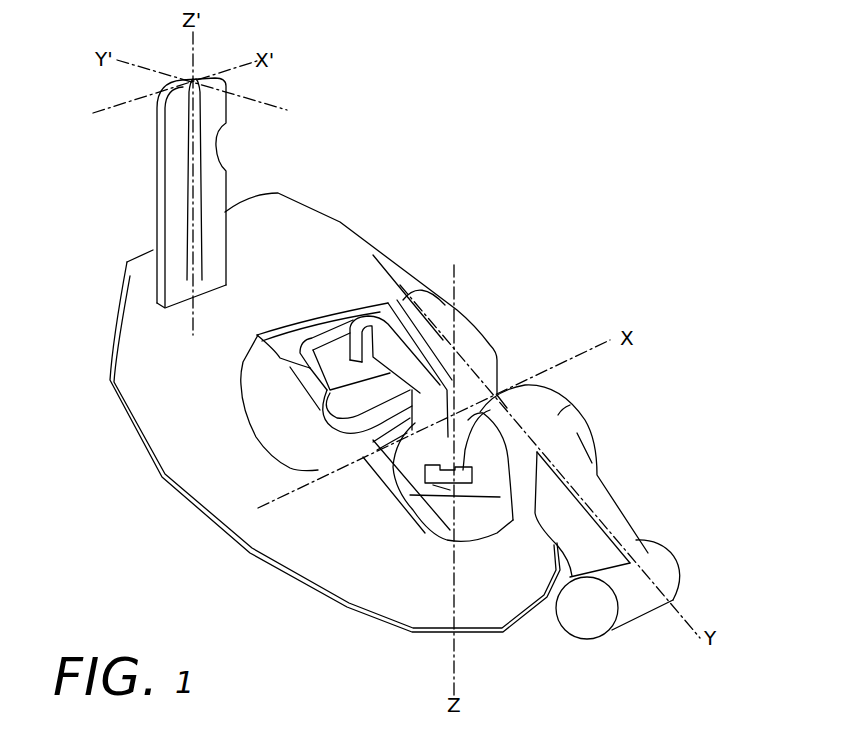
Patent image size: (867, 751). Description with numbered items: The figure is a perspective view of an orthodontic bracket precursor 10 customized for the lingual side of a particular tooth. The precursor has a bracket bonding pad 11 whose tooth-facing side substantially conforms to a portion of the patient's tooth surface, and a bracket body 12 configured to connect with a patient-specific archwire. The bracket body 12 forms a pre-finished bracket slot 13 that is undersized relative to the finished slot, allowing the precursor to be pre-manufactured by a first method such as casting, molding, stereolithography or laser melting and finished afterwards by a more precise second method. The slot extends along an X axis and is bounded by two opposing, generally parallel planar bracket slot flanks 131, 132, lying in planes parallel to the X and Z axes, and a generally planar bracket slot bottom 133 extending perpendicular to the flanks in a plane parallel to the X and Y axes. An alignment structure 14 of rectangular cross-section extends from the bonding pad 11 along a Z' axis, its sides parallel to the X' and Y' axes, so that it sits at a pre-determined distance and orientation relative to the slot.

The orthodontic bracket precursor 10 is at (468, 173).
The bracket bonding pad 11 is at (152, 412).
The bracket body 12 is at (558, 418).
The pre-finished bracket slot 13 is at (376, 491).
The alignment structure 14 is at (213, 182).
The bracket slot flank 131 is at (447, 452).
The bracket slot flank 132 is at (507, 525).
The bracket slot bottom 133 is at (427, 483).